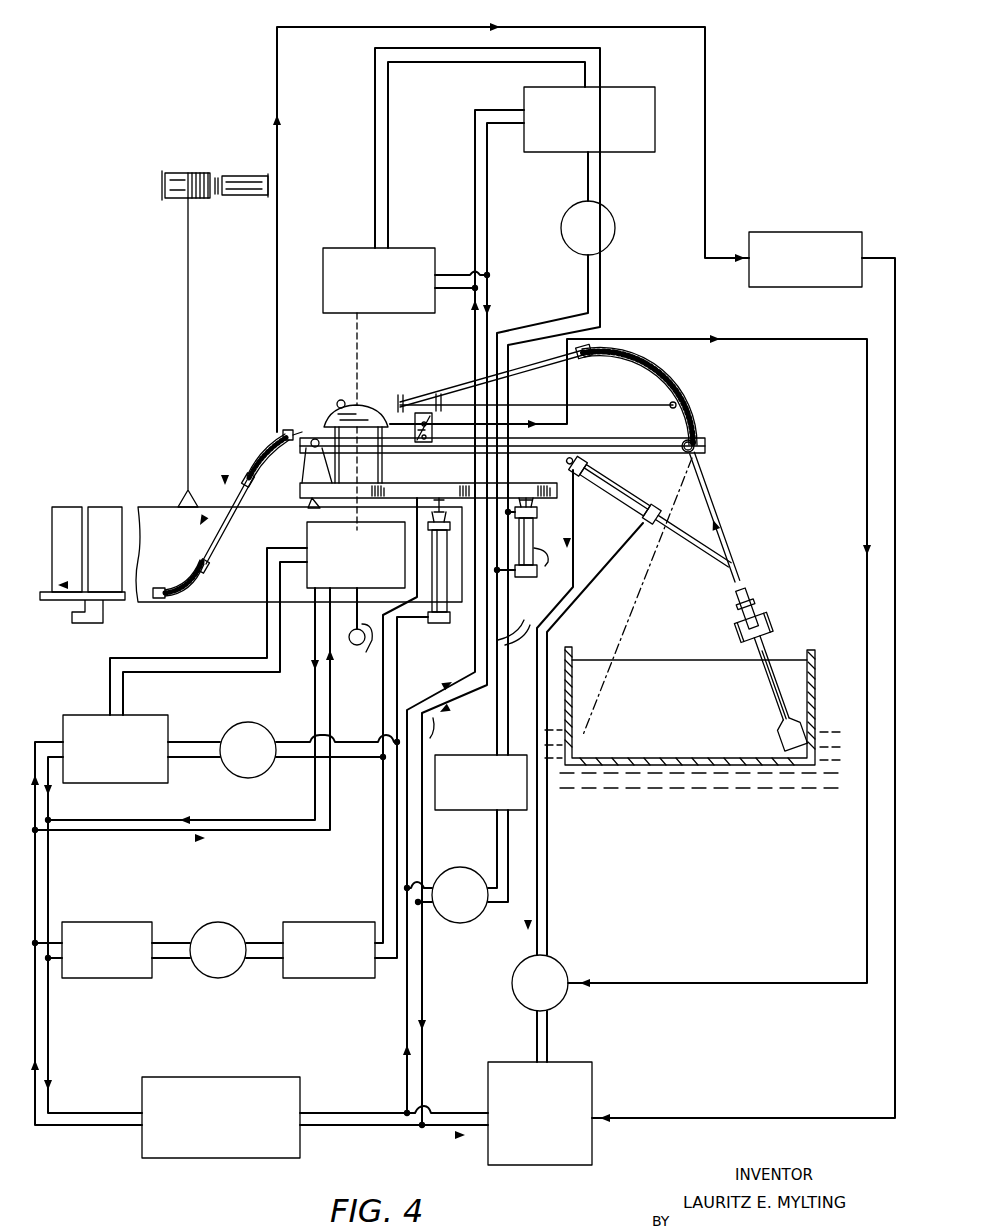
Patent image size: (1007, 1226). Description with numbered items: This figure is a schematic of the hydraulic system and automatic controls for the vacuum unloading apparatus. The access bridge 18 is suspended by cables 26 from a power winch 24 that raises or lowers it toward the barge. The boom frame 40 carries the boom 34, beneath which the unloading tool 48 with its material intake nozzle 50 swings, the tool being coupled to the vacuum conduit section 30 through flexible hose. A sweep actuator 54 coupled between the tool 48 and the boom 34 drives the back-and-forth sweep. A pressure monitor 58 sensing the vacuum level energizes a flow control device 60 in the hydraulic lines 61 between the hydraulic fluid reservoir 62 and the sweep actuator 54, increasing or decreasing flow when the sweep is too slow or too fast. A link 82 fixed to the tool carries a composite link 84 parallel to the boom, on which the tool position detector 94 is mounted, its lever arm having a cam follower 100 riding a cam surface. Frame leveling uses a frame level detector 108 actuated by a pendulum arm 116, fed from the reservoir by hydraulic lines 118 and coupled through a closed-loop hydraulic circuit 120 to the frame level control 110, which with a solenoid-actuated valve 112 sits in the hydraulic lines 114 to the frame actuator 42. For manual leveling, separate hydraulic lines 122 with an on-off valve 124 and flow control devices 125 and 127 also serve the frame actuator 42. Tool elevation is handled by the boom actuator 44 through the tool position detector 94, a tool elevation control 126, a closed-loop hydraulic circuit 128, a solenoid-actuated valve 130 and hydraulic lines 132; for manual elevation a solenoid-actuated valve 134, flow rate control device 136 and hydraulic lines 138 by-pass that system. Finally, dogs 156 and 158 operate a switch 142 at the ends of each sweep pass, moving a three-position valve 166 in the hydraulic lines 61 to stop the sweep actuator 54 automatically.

The access bridge 18 is at (235, 588).
The power winch 24 is at (181, 172).
The cables 26 is at (186, 362).
The conduit section 30 is at (225, 480).
The boom 34 is at (612, 425).
The boom frame 40 is at (556, 494).
The frame actuator 42 is at (438, 577).
The boom actuator 44 is at (530, 547).
The unloading tool 48 is at (745, 590).
The material intake nozzle 50 is at (768, 650).
The sweep actuator 54 is at (624, 524).
The pressure monitor 58 is at (800, 212).
The flow control device 60 is at (598, 1052).
The hydraulic lines 61 is at (548, 898).
The hydraulic fluid reservoir 62 is at (208, 1076).
The link 82 is at (676, 426).
The composite link 84 is at (613, 387).
The tool position detector 94 is at (338, 246).
The cam follower 100 is at (334, 404).
The frame level detector 108 is at (306, 528).
The frame level control 110 is at (80, 696).
The solenoid-actuated valve 112 is at (256, 722).
The hydraulic lines 114 is at (38, 878).
The pendulum arm 116 is at (366, 633).
The hydraulic lines 118 is at (252, 840).
The closed-loop hydraulic circuit 120 is at (208, 668).
The hydraulic lines 122 is at (168, 956).
The solenoid actuated on-off valve 124 is at (228, 922).
The flow control device 125 is at (82, 978).
The tool elevation control 126 is at (634, 86).
The flow control device 127 is at (306, 978).
The closed-loop hydraulic circuit 128 is at (378, 50).
The solenoid-actuated valve 130 is at (608, 215).
The hydraulic lines 132 is at (456, 730).
The solenoid-actuated valve 134 is at (452, 925).
The flow rate control device 136 is at (445, 812).
The hydraulic lines 138 is at (525, 617).
The switch 142 is at (453, 428).
The dog 156 is at (400, 394).
The dog 158 is at (422, 390).
The valve 166 is at (512, 996).